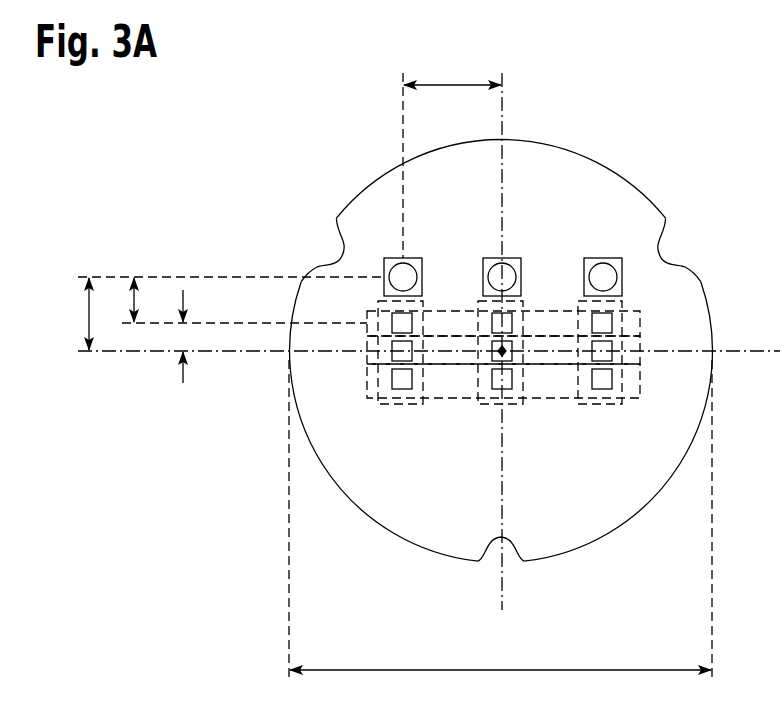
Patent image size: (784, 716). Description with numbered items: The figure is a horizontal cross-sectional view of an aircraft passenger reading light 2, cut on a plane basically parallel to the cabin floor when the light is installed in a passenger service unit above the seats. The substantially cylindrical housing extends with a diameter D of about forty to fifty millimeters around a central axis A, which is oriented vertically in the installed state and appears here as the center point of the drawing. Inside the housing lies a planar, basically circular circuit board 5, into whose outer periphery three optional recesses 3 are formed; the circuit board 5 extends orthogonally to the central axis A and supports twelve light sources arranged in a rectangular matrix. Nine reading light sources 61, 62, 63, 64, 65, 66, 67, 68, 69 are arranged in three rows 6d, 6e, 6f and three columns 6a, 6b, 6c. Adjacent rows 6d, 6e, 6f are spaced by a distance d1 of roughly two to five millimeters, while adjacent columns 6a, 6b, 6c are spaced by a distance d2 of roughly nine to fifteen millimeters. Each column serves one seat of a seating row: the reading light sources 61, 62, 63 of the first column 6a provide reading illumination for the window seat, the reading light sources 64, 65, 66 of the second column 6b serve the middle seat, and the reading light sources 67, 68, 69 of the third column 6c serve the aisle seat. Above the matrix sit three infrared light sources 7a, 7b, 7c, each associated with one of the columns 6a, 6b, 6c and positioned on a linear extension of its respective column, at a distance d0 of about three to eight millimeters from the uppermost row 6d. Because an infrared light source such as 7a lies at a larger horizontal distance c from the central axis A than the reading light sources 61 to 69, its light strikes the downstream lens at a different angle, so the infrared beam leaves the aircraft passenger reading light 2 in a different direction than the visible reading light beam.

The aircraft passenger reading light 2 is at (296, 151).
The recesses 3 is at (320, 240).
The circuit board 5 is at (657, 228).
The infrared light source 7a is at (412, 251).
The infrared light source 7b is at (506, 251).
The infrared light source 7c is at (601, 251).
The first column 6a is at (388, 378).
The second column 6b is at (525, 378).
The third column 6c is at (635, 392).
The uppermost row 6d is at (649, 327).
The row 6e is at (649, 342).
The row 6f is at (649, 387).
The reading light source 61 is at (412, 323).
The reading light source 62 is at (393, 351).
The reading light source 63 is at (393, 379).
The reading light source 64 is at (512, 323).
The reading light source 65 is at (512, 351).
The reading light source 66 is at (512, 379).
The reading light source 67 is at (612, 323).
The reading light source 68 is at (612, 351).
The reading light source 69 is at (612, 379).
The central axis A is at (502, 352).
The horizontal distance c is at (79, 314).
The distance d0 is at (120, 301).
The distance d1 is at (169, 345).
The distance d2 is at (452, 63).
The diameter D is at (500, 687).